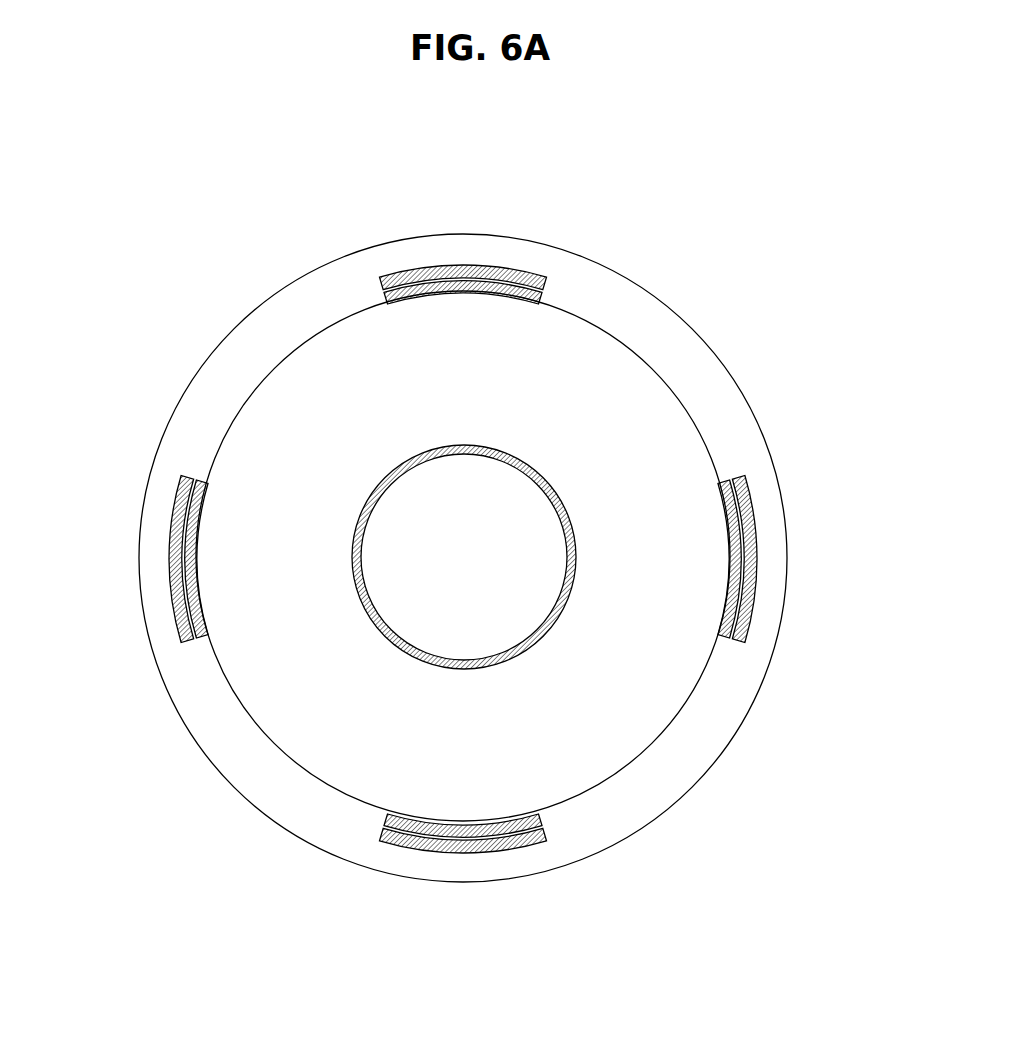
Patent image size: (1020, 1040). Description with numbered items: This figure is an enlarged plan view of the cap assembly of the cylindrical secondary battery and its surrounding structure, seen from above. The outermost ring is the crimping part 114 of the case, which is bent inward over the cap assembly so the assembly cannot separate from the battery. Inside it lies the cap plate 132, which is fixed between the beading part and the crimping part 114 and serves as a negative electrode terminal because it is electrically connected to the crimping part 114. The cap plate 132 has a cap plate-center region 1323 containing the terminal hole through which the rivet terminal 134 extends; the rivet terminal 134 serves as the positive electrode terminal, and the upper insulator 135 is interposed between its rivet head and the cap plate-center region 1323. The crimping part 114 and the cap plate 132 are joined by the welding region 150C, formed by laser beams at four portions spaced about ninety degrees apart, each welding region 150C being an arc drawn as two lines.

The crimping part 114 is at (745, 450).
The cap plate-center region 1323 is at (260, 444).
The cap plate 132 is at (329, 396).
The welding region 150C is at (531, 285).
The upper insulator 135 is at (561, 496).
The rivet terminal 134 is at (489, 510).